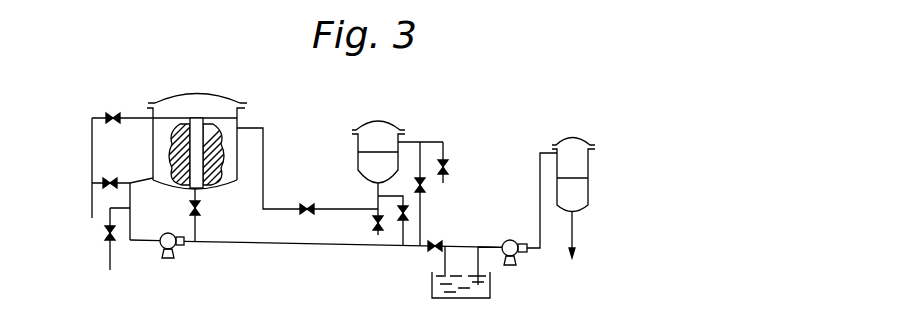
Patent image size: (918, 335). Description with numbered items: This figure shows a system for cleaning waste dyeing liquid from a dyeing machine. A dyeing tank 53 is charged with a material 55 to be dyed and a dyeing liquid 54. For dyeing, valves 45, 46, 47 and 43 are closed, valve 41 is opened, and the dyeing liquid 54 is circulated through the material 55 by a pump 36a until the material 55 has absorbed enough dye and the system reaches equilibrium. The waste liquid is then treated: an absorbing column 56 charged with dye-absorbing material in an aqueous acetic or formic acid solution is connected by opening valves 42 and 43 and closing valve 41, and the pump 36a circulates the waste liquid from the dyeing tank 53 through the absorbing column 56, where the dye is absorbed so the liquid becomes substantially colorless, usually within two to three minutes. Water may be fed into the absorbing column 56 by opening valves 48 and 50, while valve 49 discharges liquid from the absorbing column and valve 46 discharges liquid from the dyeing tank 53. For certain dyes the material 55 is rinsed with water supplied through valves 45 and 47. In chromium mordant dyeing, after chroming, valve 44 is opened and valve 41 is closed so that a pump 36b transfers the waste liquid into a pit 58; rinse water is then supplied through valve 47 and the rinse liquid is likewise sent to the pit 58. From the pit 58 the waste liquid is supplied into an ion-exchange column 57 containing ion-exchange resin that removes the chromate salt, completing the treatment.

The pump 36a is at (170, 260).
The pump 36b is at (514, 264).
The valve 41 is at (197, 213).
The valve 42 is at (425, 190).
The valve 43 is at (306, 203).
The valve 44 is at (438, 243).
The valve 45 is at (107, 114).
The valve 46 is at (110, 178).
The valve 47 is at (108, 238).
The valve 48 is at (372, 225).
The valve 49 is at (400, 222).
The valve 50 is at (450, 165).
The dyeing tank 53 is at (181, 92).
The dyeing liquid 54 is at (226, 186).
The material to be dyed 55 is at (221, 120).
The absorbing column 56 is at (397, 119).
The ion-exchange column 57 is at (580, 135).
The pit 58 is at (485, 300).